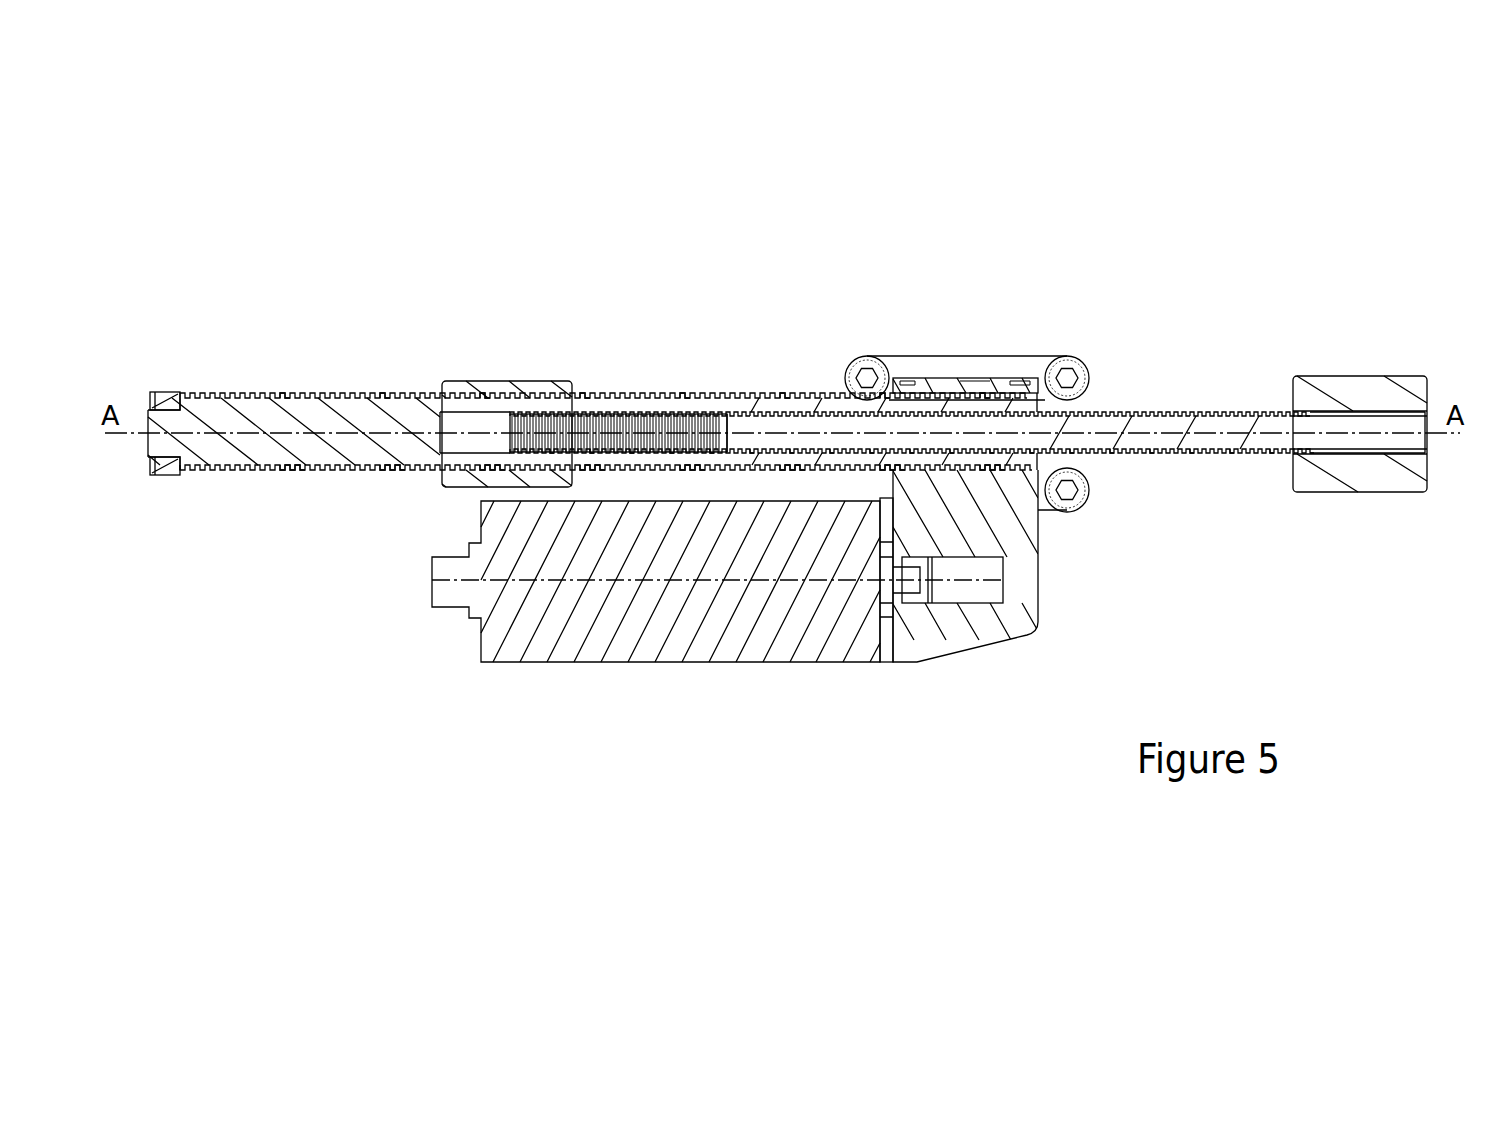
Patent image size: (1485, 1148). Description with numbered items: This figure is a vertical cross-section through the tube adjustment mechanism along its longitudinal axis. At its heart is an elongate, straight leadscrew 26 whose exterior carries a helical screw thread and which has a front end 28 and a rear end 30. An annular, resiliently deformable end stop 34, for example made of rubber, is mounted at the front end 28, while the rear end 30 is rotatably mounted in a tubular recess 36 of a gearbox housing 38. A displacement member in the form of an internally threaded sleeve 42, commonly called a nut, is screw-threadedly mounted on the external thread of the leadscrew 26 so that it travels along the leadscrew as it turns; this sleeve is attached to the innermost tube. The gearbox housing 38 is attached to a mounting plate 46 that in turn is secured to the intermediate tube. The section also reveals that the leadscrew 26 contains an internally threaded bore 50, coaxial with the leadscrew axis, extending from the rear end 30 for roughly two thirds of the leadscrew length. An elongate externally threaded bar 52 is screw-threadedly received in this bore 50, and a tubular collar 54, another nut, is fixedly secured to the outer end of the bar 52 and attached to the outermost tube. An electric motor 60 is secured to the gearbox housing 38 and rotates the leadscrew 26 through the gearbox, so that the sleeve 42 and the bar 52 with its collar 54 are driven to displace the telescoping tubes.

The leadscrew 26 is at (770, 388).
The front end 28 is at (327, 395).
The rear end 30 is at (1060, 398).
The end stop 34 is at (167, 395).
The tubular recess 36 is at (950, 400).
The gearbox housing 38 is at (1052, 556).
The internally threaded sleeve 42 is at (512, 378).
The mounting plate 46 is at (995, 357).
The internally threaded bore 50 is at (650, 413).
The externally threaded bar 52 is at (1228, 410).
The tubular collar 54 is at (1355, 375).
The electric motor 60 is at (695, 620).